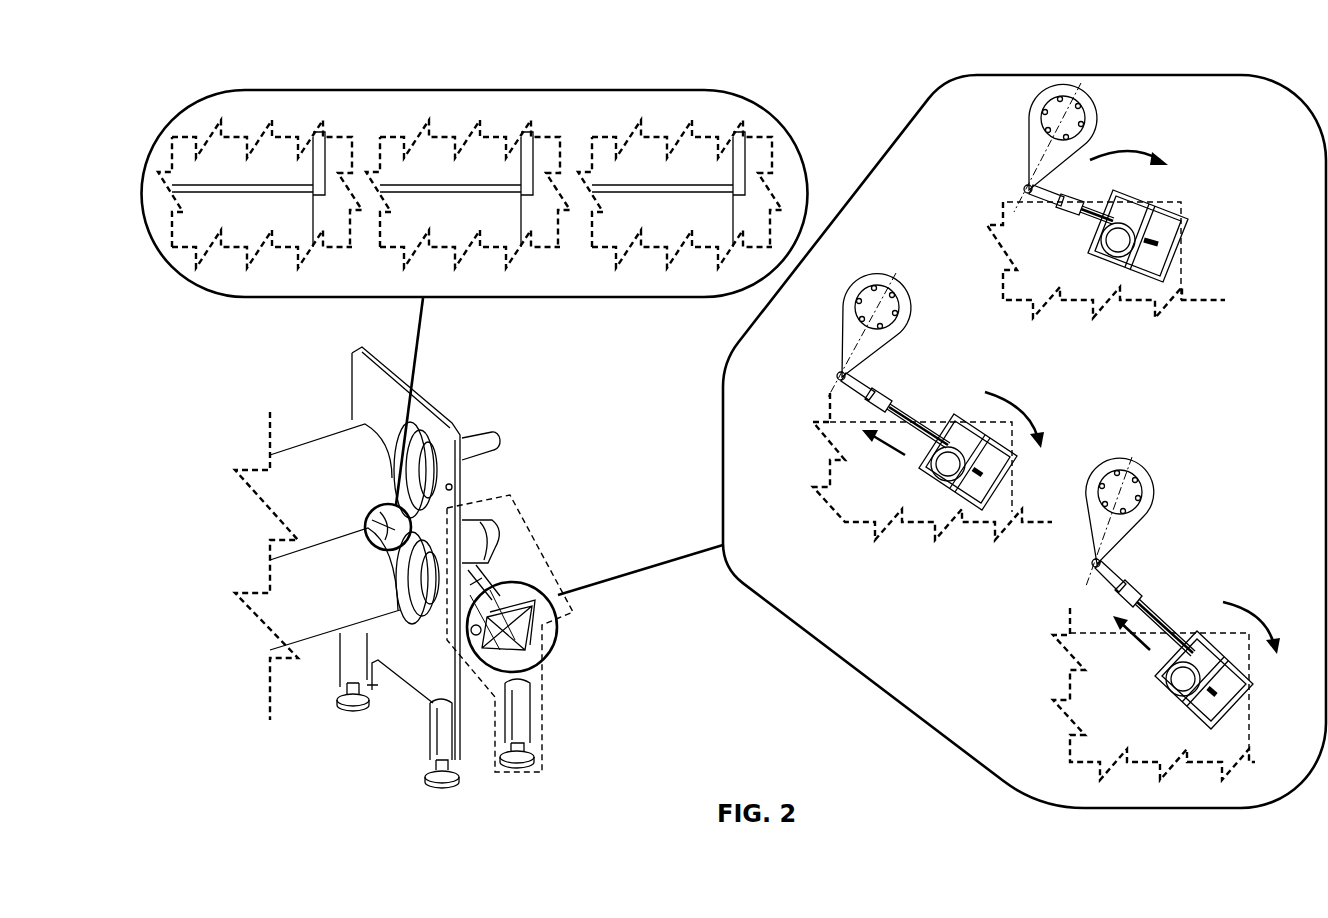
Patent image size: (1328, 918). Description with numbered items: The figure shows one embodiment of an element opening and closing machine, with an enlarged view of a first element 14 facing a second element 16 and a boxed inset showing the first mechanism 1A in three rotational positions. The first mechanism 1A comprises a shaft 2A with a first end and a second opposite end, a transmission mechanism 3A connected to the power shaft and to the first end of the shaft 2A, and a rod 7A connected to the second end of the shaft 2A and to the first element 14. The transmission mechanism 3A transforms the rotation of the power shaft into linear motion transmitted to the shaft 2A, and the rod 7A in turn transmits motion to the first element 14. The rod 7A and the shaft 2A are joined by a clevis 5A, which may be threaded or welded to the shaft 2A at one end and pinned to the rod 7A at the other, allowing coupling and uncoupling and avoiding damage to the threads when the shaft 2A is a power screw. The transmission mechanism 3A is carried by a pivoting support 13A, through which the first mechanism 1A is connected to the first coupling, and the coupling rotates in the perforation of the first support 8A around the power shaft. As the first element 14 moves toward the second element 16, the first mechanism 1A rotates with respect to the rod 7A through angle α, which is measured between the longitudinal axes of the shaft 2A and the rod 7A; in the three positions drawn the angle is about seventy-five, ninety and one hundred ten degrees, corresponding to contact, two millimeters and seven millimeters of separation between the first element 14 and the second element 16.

The first mechanism 1A is at (552, 749).
The shaft 2A is at (533, 651).
The transmission mechanism 3A is at (470, 628).
The clevis 5A is at (483, 562).
The rod 7A is at (474, 528).
The first support 8A is at (543, 707).
The pivoting support 13A is at (540, 634).
The first element 14 is at (190, 222).
The second element 16 is at (268, 150).